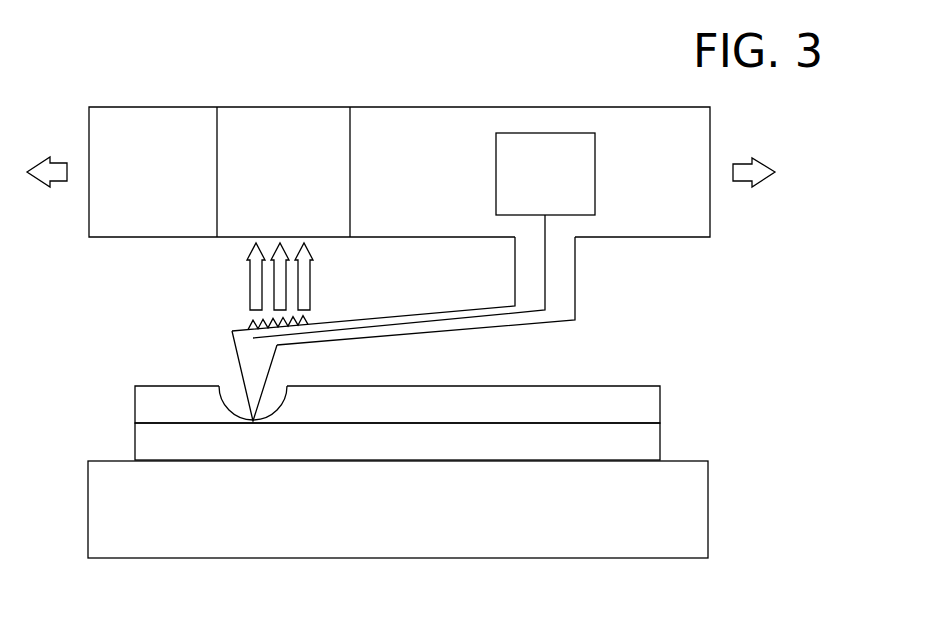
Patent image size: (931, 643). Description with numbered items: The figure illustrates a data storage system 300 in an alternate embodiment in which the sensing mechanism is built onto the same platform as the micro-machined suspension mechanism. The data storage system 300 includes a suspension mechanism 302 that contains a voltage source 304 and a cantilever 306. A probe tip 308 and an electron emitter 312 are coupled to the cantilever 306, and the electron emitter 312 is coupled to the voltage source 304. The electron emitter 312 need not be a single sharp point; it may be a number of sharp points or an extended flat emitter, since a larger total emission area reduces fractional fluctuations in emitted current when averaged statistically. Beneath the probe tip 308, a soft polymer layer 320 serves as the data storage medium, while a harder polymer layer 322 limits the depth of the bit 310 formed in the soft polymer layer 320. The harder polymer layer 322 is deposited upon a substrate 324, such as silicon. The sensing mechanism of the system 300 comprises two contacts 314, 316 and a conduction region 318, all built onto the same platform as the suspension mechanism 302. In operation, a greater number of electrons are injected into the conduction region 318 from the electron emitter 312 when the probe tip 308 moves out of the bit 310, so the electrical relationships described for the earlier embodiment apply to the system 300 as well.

The data storage system 300 is at (112, 65).
The suspension mechanism 302 is at (640, 107).
The voltage source 304 is at (595, 173).
The cantilever 306 is at (575, 285).
The probe tip 308 is at (224, 350).
The bit 310 is at (228, 380).
The electron emitter 312 is at (240, 320).
The contact 314 is at (147, 237).
The contact 316 is at (427, 237).
The conduction region 318 is at (275, 115).
The soft polymer layer 320 is at (660, 392).
The harder polymer layer 322 is at (660, 432).
The substrate 324 is at (88, 498).